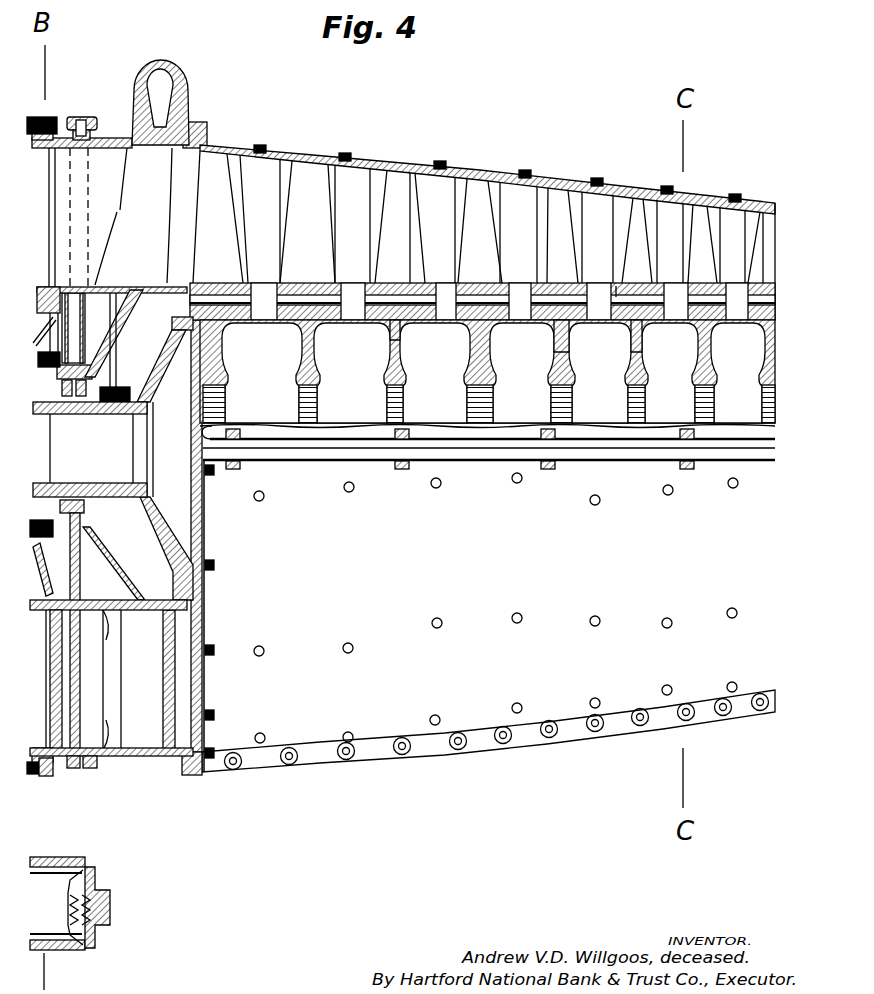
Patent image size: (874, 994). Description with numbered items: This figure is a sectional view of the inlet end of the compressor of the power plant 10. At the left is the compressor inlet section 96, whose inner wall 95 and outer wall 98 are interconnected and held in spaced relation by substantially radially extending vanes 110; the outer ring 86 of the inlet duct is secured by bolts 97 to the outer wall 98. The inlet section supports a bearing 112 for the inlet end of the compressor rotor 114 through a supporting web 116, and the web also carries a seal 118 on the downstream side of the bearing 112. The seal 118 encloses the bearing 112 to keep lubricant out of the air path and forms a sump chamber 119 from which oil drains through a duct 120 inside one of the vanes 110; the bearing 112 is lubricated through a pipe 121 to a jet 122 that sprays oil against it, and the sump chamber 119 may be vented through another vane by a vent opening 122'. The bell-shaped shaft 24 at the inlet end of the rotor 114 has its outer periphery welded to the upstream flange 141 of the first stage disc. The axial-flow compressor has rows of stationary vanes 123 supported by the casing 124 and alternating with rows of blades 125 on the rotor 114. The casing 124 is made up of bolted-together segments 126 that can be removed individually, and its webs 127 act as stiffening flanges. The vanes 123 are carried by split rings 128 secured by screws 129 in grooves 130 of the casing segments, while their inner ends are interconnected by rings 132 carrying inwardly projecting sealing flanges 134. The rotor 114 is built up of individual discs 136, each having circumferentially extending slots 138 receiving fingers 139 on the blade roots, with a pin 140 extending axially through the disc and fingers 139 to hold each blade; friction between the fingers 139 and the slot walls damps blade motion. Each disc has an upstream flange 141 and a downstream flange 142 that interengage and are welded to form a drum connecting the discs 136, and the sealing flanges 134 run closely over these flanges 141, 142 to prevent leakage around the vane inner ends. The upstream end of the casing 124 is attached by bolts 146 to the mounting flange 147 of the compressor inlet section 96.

The turbine section 10 is at (618, 187).
The shaft 24 is at (142, 410).
The outer ring 86 is at (36, 748).
The inner wall 95 is at (100, 288).
The compressor inlet section 96 is at (115, 216).
The bolts 97 is at (33, 777).
The outer wall 98 is at (157, 757).
The vanes 110 is at (170, 230).
The bearing 112 is at (73, 413).
The compressor rotor 114 is at (405, 375).
The supporting web 116 is at (123, 313).
The seal 118 is at (117, 390).
The sump chamber 119 is at (100, 590).
The duct 120 is at (110, 678).
The pipe 121 is at (72, 677).
The jet 122 is at (47, 599).
The vent opening 122' is at (69, 240).
The stationary vanes 123 is at (340, 190).
The casing 124 is at (403, 163).
The blades 125 is at (553, 208).
The segments 126 is at (350, 685).
The webs 127 is at (385, 442).
The rings 128 is at (363, 163).
The screws 129 is at (350, 155).
The grooves 130 is at (455, 185).
The rings 132 is at (338, 297).
The sealing flanges 134 is at (300, 337).
The discs 136 is at (553, 327).
The slots 138 is at (630, 318).
The fingers 139 is at (630, 293).
The pin 140 is at (660, 300).
The upstream flange 141 is at (438, 320).
The downstream flange 142 is at (437, 287).
The bolts 146 is at (210, 713).
The mounting flange 147 is at (187, 777).